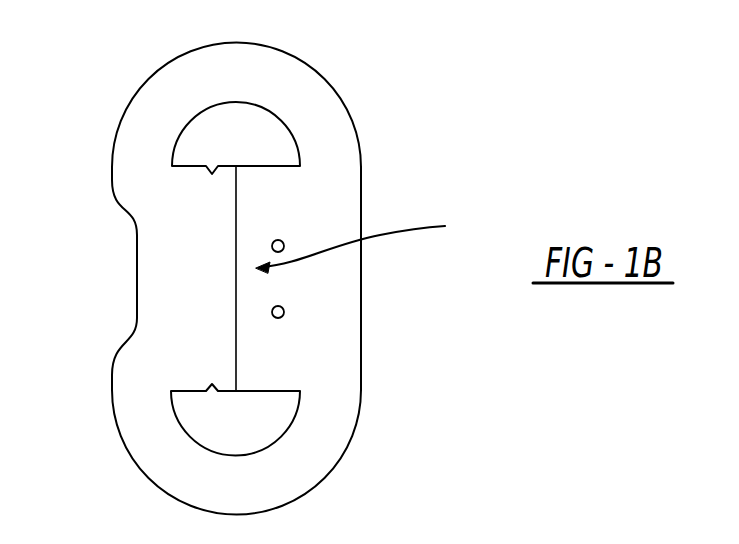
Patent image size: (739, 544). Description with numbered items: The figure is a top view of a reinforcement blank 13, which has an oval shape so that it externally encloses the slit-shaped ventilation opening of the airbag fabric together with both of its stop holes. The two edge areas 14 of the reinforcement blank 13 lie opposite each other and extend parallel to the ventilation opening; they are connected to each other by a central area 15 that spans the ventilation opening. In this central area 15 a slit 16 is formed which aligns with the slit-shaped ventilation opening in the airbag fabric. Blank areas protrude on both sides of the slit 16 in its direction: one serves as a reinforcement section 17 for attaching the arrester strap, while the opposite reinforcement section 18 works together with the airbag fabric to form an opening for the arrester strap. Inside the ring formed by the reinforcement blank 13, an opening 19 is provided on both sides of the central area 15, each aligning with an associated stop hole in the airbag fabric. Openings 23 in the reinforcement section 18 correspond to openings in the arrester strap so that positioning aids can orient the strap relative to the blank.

The reinforcement blank 13 is at (339, 120).
The edge areas 14 is at (145, 199).
The central area 15 is at (361, 243).
The slit 16 is at (236, 318).
The reinforcement section 17 is at (202, 237).
The reinforcement section 18 is at (332, 295).
The opening 19 is at (253, 133).
The openings 23 is at (283, 316).